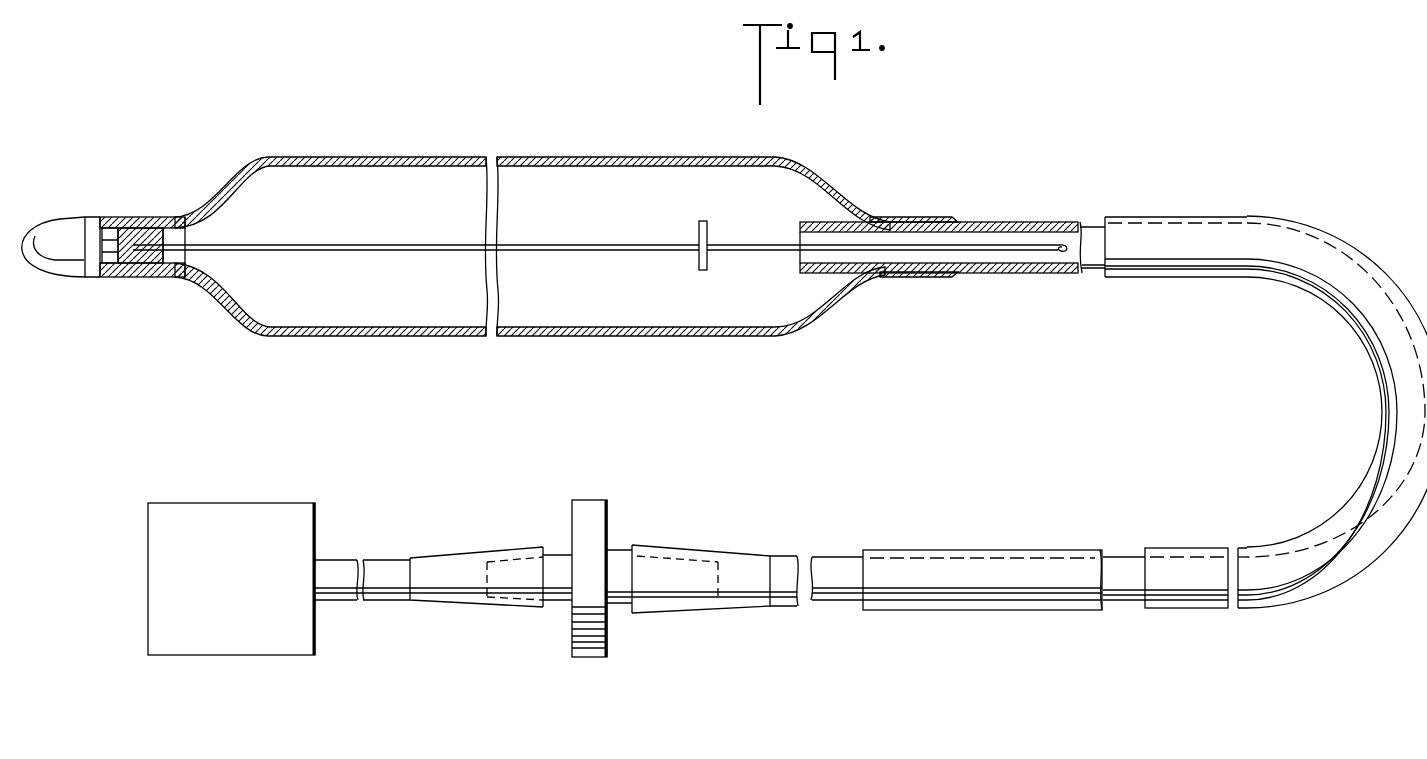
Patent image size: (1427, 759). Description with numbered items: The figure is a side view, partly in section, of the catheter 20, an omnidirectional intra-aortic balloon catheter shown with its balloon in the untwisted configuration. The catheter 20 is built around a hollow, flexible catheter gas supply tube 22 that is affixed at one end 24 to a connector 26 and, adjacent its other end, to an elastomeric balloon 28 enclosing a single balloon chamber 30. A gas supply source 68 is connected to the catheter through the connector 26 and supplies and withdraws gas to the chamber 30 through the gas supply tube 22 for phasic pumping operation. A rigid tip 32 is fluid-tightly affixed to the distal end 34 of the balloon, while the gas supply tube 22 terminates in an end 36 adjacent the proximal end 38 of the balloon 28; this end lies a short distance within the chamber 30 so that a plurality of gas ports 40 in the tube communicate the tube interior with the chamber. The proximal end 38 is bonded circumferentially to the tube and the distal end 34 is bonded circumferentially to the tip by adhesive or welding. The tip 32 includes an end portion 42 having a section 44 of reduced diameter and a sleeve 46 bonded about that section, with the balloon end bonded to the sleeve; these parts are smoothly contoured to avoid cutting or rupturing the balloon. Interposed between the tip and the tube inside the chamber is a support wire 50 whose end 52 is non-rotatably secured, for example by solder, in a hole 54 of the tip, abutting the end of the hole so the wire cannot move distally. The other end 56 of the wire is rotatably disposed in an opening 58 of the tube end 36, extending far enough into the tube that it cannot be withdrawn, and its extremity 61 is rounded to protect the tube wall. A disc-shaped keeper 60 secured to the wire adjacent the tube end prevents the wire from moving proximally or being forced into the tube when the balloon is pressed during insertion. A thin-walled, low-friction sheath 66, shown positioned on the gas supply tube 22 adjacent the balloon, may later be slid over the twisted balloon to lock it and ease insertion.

The catheter 20 is at (968, 150).
The catheter gas supply tube 22 is at (1087, 212).
The end of gas supply tube 24 is at (708, 554).
The connector 26 is at (583, 500).
The elastomeric balloon 28 is at (607, 152).
The balloon chamber 30 is at (535, 216).
The rigid tip 32 is at (73, 213).
The distal end of balloon 34 is at (200, 197).
The end of gas supply tube 36 is at (807, 269).
The proximal end of balloon 38 is at (947, 216).
The gas ports 40 is at (885, 278).
The end portion of tip 42 is at (70, 266).
The section of reduced diameter 44 is at (125, 276).
The sleeve 46 is at (178, 276).
The support wire 50 is at (551, 247).
The end of support wire 52 is at (171, 222).
The hole 54 is at (134, 224).
The end of support wire 56 is at (966, 253).
The opening 58 is at (805, 256).
The disc-shaped keeper 60 is at (707, 223).
The extremity of wire end 61 is at (1062, 262).
The sheath 66 is at (1142, 276).
The gas supply source 68 is at (315, 512).